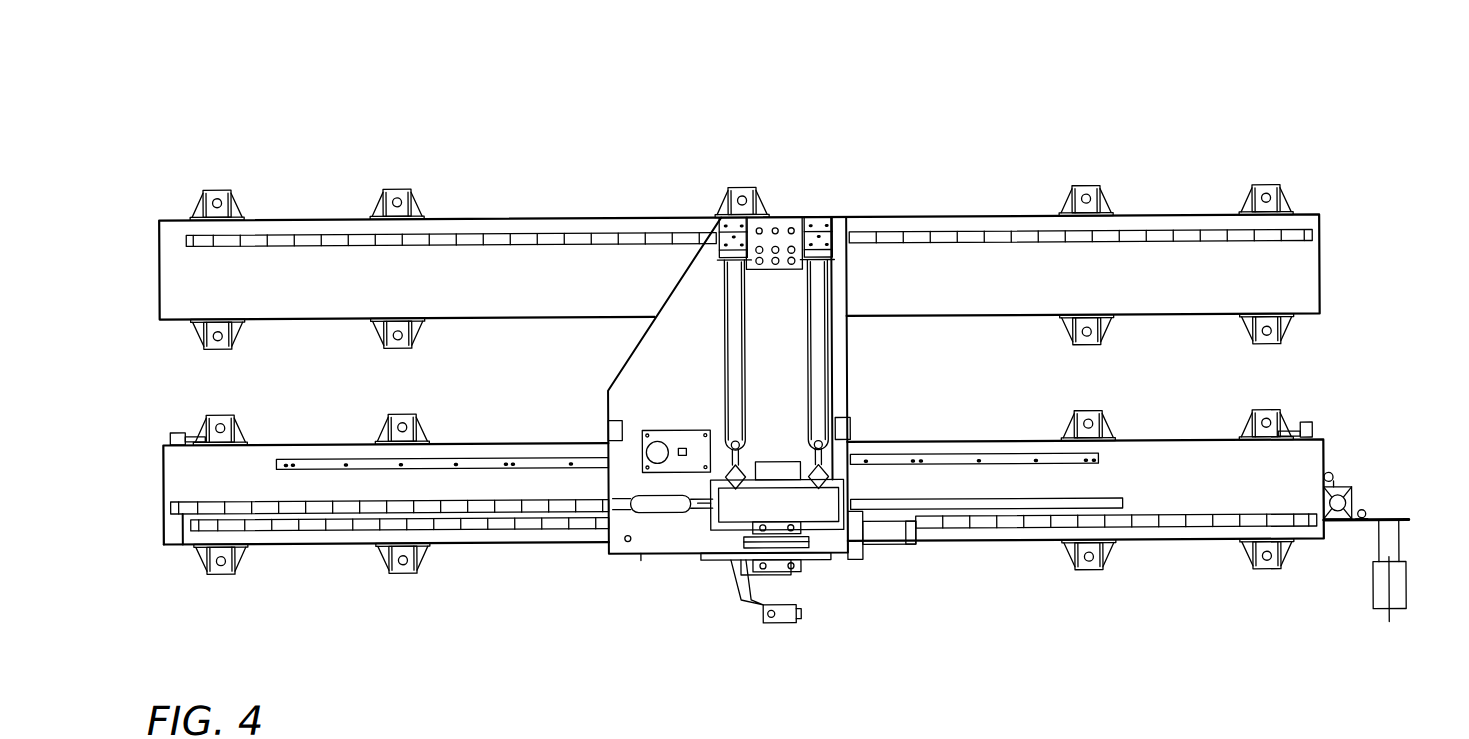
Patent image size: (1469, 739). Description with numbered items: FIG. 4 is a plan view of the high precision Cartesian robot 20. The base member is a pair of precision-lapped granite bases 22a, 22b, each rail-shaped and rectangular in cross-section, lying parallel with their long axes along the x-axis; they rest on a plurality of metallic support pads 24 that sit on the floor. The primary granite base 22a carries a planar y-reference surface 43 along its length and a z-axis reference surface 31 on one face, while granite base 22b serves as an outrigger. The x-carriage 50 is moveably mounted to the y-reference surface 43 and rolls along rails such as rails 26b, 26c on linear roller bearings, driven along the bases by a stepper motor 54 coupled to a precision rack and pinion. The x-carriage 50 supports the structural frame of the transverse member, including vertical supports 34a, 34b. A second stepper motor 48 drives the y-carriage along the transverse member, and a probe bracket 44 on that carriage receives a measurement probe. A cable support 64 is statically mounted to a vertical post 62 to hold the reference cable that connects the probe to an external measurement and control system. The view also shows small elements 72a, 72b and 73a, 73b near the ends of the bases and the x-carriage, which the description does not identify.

The Cartesian robot 20 is at (913, 108).
The primary granite base 22a is at (1183, 452).
The granite base 22b is at (1305, 275).
The metallic support pads 24 is at (423, 198).
The rail 26b is at (1188, 529).
The rail 26c is at (179, 545).
The z-axis reference surface 31 is at (468, 545).
The vertical support 34a is at (850, 495).
The vertical support 34b is at (705, 520).
The y-reference surface 43 is at (180, 470).
The probe bracket 44 is at (785, 623).
The stepper motor 48 is at (878, 545).
The x-carriage 50 is at (852, 372).
The stepper motor 54 is at (688, 432).
The vertical post 62 is at (1342, 490).
The cable support 64 is at (1405, 590).
The sensor 72a is at (178, 430).
The sensor 72b is at (1308, 425).
The stop 73a is at (606, 425).
The stop 73b is at (853, 432).